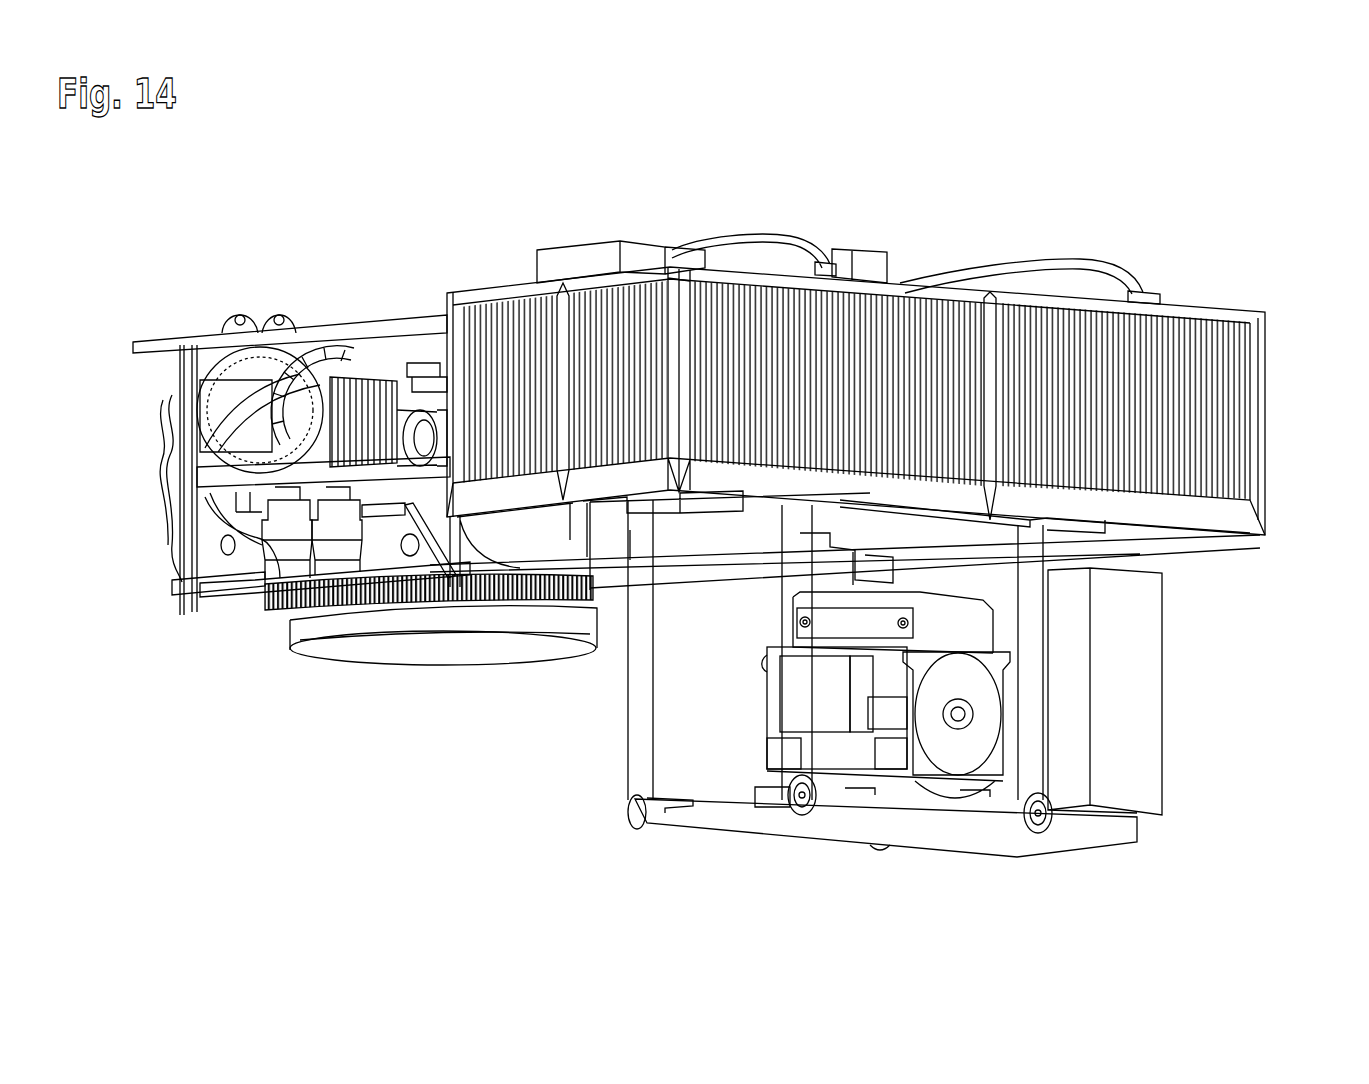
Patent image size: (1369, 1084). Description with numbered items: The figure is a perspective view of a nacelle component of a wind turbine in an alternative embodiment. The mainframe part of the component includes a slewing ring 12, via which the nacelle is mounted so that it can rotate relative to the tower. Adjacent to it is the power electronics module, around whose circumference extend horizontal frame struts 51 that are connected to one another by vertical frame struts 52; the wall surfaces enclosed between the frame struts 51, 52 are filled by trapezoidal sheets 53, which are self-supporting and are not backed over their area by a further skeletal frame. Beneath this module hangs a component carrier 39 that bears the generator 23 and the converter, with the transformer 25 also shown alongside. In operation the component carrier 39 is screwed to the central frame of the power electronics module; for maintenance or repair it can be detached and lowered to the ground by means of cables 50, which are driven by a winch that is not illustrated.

The slewing ring 12 is at (413, 622).
The generator 23 is at (772, 700).
The transformer 25 is at (1145, 774).
The component carrier 39 is at (932, 838).
The cables 50 is at (627, 733).
The horizontal frame struts 51 is at (484, 296).
The vertical frame struts 52 is at (447, 336).
The trapezoidal sheets 53 is at (1056, 338).